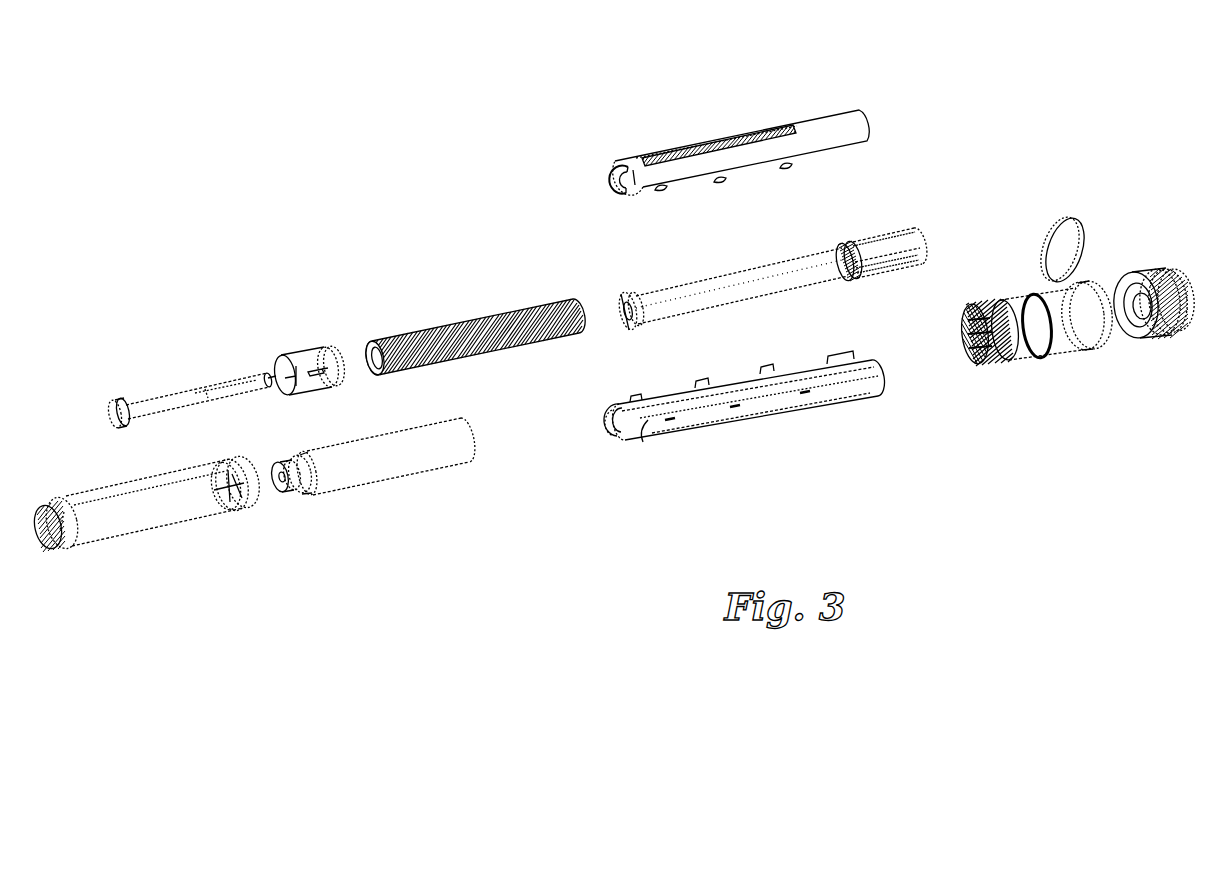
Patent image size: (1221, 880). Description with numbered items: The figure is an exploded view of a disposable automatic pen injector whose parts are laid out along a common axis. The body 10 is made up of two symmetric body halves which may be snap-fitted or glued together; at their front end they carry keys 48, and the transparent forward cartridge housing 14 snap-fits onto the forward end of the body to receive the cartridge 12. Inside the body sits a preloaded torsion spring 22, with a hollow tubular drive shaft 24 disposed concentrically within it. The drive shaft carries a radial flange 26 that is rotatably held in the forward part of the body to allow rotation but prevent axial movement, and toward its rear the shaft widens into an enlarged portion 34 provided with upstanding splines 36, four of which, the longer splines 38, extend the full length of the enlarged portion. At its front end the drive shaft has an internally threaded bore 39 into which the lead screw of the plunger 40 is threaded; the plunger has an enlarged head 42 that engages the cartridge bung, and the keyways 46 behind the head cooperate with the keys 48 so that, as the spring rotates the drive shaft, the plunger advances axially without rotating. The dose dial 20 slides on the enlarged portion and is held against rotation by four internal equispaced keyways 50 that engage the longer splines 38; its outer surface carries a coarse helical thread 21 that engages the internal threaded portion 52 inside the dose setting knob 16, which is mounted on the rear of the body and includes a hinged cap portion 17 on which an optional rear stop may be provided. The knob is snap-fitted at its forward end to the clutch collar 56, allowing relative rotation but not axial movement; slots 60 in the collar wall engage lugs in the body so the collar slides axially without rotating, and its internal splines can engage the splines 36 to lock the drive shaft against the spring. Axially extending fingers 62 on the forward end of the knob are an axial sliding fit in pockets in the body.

The body 10 is at (807, 128).
The cartridge 12 is at (392, 455).
The forward cartridge housing 14 is at (175, 522).
The dose setting knob 16 is at (1062, 342).
The hinged cap portion 17 is at (1070, 232).
The dose dial 20 is at (1167, 282).
The coarse helical thread 21 is at (1180, 318).
The torsion spring 22 is at (466, 335).
The drive shaft 24 is at (752, 296).
The radial flange 26 is at (636, 300).
The enlarged portion 34 is at (912, 243).
The splines 36 is at (841, 252).
The longer splines 38 is at (930, 264).
The internally threaded bore 39 is at (624, 320).
The plunger 40 is at (160, 400).
The enlarged head 42 is at (119, 420).
The keyways 46 is at (213, 385).
The keys 48 is at (617, 186).
The internal keyways 50 is at (1138, 316).
The internal threaded portion 52 is at (993, 345).
The clutch collar 56 is at (297, 360).
The slots 60 is at (321, 366).
The axially extending fingers 62 is at (967, 336).